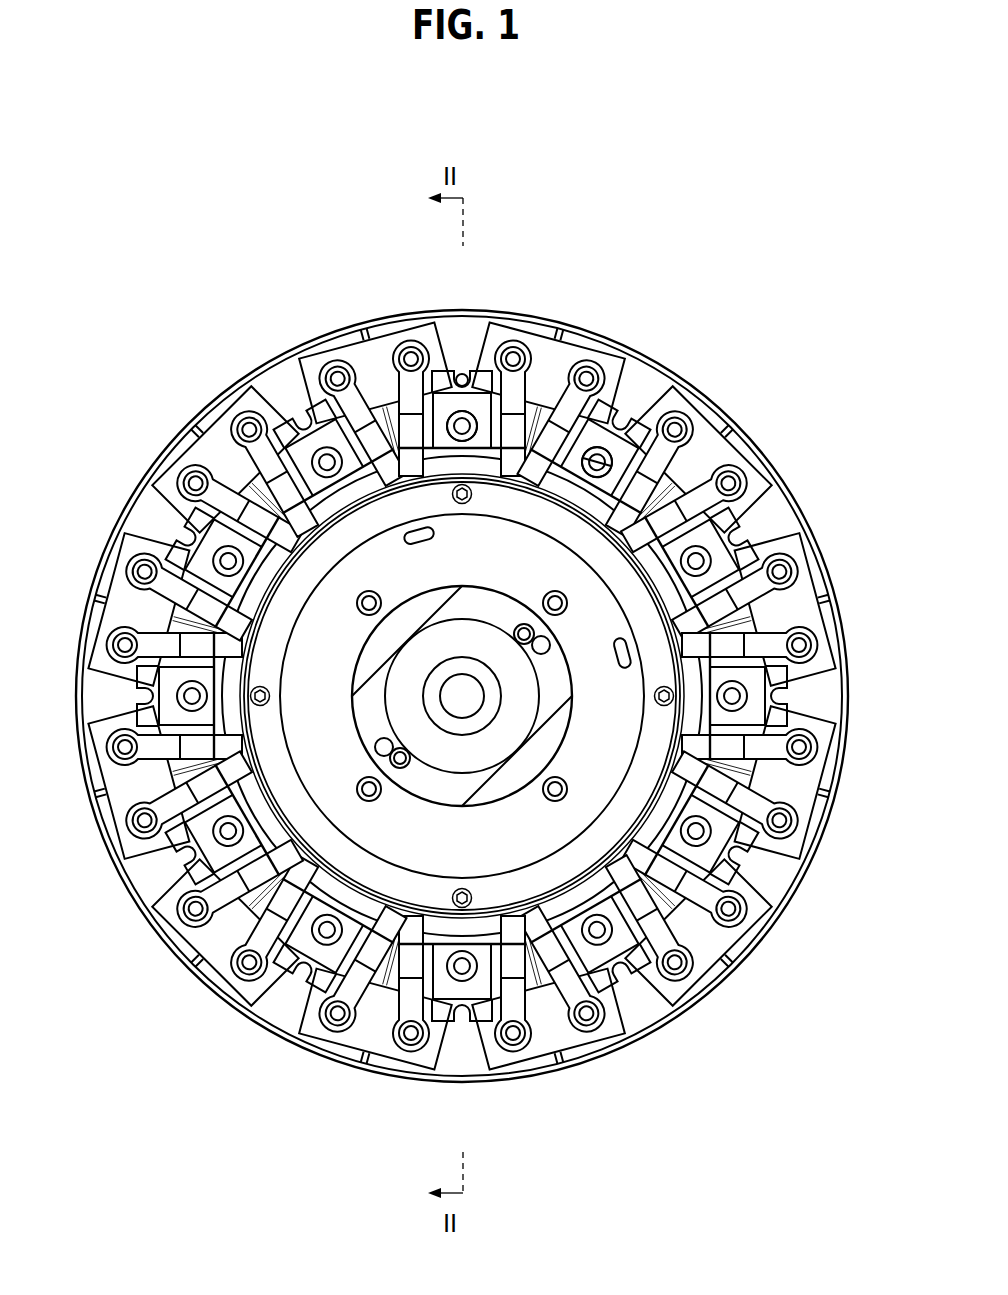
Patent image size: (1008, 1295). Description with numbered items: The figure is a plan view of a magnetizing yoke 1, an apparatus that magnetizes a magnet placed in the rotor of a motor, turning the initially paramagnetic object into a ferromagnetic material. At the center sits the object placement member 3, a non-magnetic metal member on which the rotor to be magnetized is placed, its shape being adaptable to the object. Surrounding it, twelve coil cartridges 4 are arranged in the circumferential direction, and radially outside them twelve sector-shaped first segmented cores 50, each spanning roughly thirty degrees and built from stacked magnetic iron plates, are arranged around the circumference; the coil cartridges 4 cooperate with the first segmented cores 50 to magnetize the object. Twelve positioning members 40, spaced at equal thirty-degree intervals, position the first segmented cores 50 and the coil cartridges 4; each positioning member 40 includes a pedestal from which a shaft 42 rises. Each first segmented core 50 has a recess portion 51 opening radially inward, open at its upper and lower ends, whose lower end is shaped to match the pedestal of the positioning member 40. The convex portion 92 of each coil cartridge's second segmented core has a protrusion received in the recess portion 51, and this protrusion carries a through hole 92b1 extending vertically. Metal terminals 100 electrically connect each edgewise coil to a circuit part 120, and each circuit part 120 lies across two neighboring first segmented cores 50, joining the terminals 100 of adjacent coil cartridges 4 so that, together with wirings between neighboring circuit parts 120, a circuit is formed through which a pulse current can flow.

The magnetizing yoke 1 is at (245, 258).
The object placement member 3 is at (370, 716).
The coil cartridge 4 is at (345, 500).
The positioning member 40 is at (406, 329).
The shaft 42 is at (462, 426).
The first segmented core 50 is at (440, 330).
The recess portion 51 is at (463, 372).
The convex portion 92 is at (622, 430).
The through hole 92b1 is at (600, 458).
The terminal 100 is at (617, 427).
The circuit part 120 is at (350, 352).